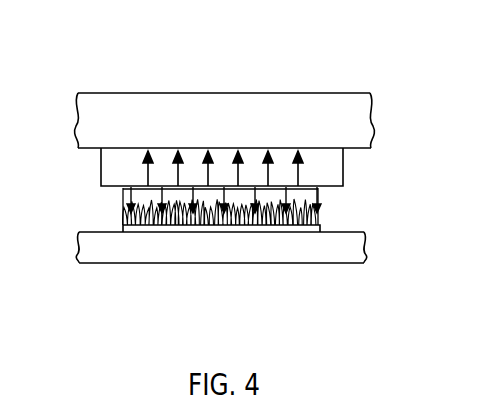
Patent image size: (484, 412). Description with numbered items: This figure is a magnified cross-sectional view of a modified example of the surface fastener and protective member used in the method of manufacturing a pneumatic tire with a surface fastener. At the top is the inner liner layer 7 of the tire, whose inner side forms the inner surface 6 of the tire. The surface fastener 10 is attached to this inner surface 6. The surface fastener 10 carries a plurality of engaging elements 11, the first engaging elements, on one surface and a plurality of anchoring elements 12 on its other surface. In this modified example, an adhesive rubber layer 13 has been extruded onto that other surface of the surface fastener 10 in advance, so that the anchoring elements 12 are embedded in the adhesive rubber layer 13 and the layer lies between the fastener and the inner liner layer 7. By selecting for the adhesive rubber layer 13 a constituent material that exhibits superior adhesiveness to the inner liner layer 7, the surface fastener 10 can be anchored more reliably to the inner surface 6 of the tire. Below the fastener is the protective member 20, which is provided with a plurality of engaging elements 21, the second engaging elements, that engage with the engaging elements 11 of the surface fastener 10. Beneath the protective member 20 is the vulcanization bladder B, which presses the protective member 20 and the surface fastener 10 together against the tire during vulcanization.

The inner surface of the tire 6 is at (98, 151).
The inner liner layer 7 is at (353, 124).
The surface fastener 10 is at (252, 192).
The engaging elements 11 is at (158, 193).
The anchoring elements 12 is at (148, 180).
The adhesive rubber layer 13 is at (335, 170).
The protective member 20 is at (236, 226).
The engaging elements 21 is at (126, 198).
The vulcanization bladder B is at (357, 245).